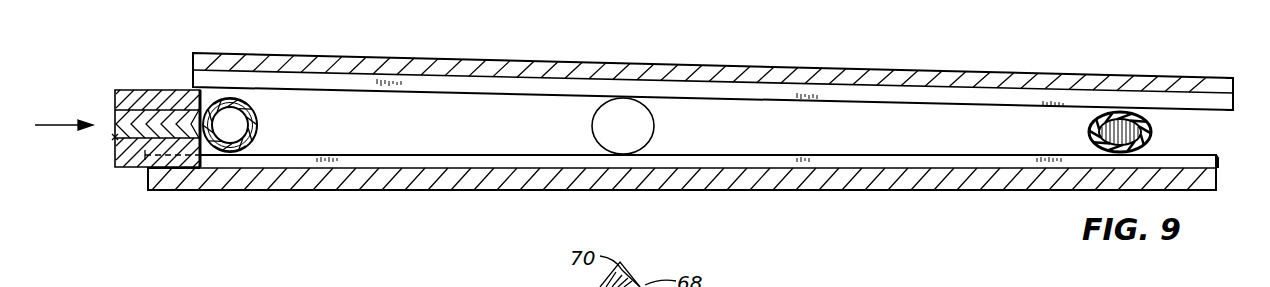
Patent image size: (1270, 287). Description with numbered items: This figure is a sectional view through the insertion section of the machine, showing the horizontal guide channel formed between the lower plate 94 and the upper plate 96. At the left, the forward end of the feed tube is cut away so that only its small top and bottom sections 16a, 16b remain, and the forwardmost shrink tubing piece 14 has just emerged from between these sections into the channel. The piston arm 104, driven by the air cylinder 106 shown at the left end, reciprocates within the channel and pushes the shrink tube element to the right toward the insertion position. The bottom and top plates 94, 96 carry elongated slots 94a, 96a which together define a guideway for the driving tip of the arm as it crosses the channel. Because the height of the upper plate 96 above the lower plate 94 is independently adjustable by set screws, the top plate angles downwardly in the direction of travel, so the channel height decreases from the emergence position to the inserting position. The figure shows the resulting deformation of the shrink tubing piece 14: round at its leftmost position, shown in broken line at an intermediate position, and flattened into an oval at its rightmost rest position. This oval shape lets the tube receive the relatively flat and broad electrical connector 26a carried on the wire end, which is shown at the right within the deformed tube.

The shrink tubing piece 14 is at (258, 115).
The top section of tube 16a is at (230, 96).
The bottom section of tube 16b is at (207, 152).
The electrical connector 26a is at (1152, 128).
The lower plate 94 is at (1200, 181).
The elongated slot in lower plate 94a is at (1216, 158).
The upper plate 96 is at (1180, 76).
The elongated slot in upper plate 96a is at (1236, 98).
The piston arm 104 is at (114, 137).
The air cylinder 106 is at (157, 95).